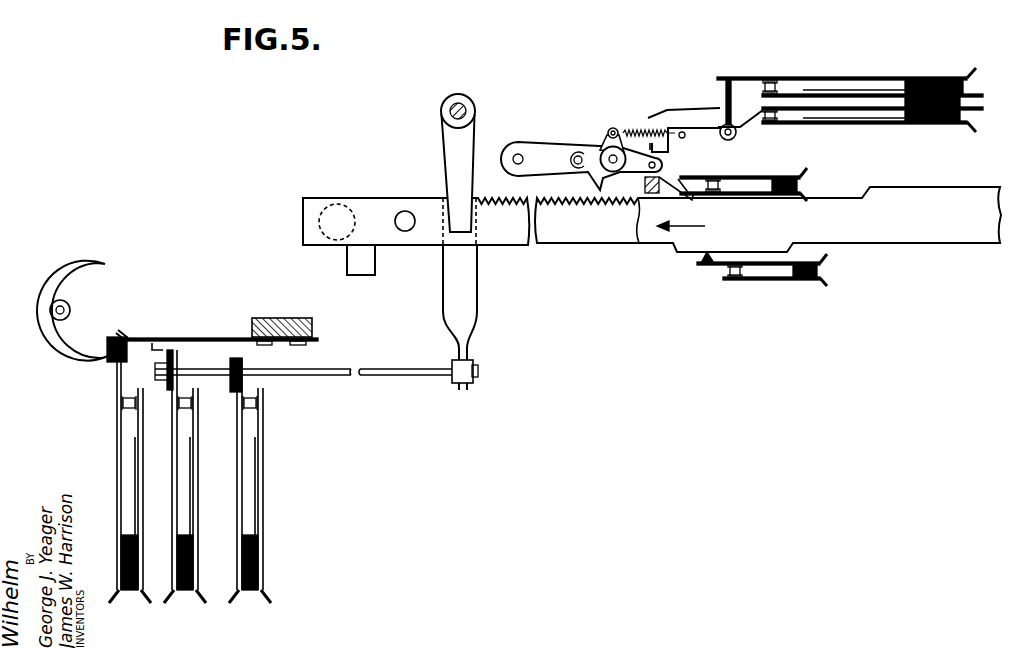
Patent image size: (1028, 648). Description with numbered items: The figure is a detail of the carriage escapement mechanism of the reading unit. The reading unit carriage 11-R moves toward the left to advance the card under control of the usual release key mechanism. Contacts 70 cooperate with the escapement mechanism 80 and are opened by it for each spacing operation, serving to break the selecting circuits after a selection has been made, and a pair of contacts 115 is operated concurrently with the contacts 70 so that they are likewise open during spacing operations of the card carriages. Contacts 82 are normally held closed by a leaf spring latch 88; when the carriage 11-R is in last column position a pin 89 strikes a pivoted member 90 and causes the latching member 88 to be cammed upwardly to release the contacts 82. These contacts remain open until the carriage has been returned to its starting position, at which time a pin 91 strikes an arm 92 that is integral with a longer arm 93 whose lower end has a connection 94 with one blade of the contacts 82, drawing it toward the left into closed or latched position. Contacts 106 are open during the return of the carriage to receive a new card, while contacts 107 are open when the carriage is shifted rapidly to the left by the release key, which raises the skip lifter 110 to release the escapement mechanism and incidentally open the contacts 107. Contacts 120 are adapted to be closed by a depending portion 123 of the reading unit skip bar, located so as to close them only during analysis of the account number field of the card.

The reading unit carriage 11-R is at (370, 207).
The pin 89 is at (350, 263).
The pin 91 is at (405, 222).
The arm 92 is at (452, 157).
The longer arm 93 is at (467, 293).
The connection 94 is at (400, 370).
The pivoted member 90 is at (73, 273).
The leaf spring latch 88 is at (155, 343).
The contacts 82 is at (185, 410).
The contacts 106 is at (250, 412).
The escapement mechanism 80 is at (602, 137).
The contacts 107 is at (723, 185).
The skip lifter 110 is at (657, 195).
The contacts 115 is at (780, 88).
The contacts 70 is at (782, 118).
The depending portion 123 is at (758, 250).
The contacts 120 is at (725, 272).